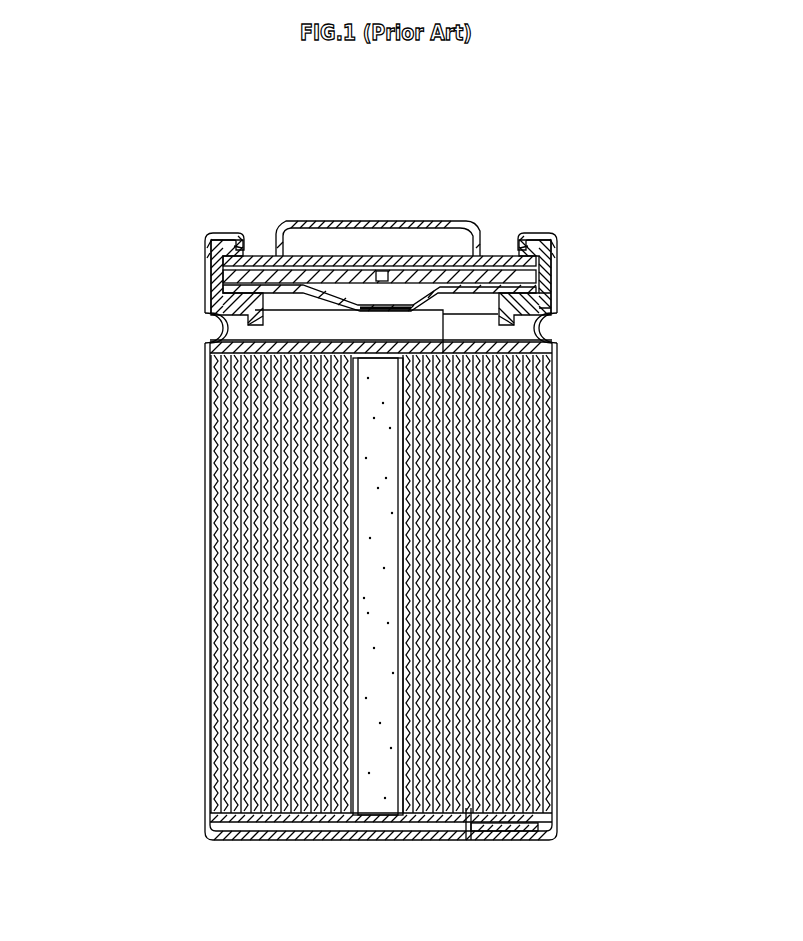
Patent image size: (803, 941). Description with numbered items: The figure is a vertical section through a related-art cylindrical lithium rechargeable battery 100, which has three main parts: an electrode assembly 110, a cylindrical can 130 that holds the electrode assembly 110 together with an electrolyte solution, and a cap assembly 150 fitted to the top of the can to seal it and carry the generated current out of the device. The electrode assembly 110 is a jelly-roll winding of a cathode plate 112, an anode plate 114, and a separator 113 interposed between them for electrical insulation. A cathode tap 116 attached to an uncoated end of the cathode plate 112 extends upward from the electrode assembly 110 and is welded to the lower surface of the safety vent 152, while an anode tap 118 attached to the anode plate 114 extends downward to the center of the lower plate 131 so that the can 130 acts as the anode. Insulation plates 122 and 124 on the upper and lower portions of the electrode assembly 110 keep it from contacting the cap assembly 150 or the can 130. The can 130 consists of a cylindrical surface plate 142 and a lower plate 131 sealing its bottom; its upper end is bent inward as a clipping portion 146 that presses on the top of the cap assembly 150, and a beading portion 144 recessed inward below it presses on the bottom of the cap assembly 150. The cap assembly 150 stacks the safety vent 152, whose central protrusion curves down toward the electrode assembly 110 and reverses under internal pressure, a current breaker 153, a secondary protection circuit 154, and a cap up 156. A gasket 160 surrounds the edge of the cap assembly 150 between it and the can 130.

The cylindrical lithium rechargeable battery 100 is at (572, 199).
The electrode assembly 110 is at (650, 507).
The cathode plate 112 is at (537, 380).
The separator 113 is at (545, 420).
The anode plate 114 is at (527, 450).
The cathode tap 116 is at (538, 317).
The anode tap 118 is at (453, 833).
The insulation plate 122 is at (540, 335).
The insulation plate 124 is at (547, 825).
The cylindrical can 130 is at (87, 295).
The lower plate 131 is at (223, 832).
The cylindrical surface plate 142 is at (197, 373).
The beading portion 144 is at (207, 320).
The clipping portion 146 is at (195, 233).
The cap assembly 150 is at (333, 147).
The safety vent 152 is at (482, 250).
The current breaker 153 is at (391, 262).
The secondary protection circuit 154 is at (428, 285).
The cap up 156 is at (343, 213).
The gasket 160 is at (212, 228).